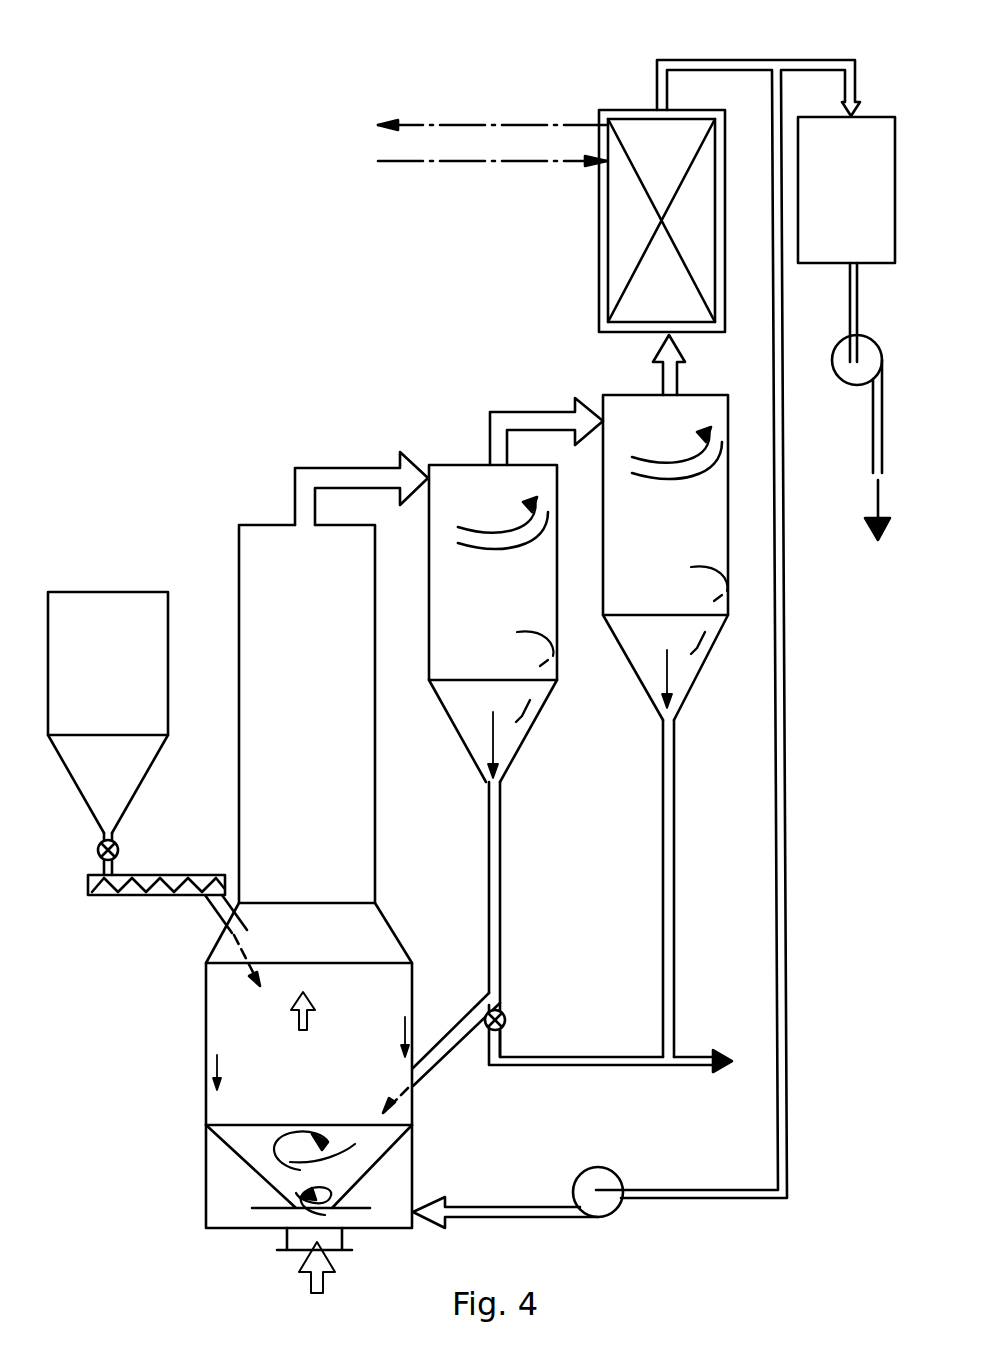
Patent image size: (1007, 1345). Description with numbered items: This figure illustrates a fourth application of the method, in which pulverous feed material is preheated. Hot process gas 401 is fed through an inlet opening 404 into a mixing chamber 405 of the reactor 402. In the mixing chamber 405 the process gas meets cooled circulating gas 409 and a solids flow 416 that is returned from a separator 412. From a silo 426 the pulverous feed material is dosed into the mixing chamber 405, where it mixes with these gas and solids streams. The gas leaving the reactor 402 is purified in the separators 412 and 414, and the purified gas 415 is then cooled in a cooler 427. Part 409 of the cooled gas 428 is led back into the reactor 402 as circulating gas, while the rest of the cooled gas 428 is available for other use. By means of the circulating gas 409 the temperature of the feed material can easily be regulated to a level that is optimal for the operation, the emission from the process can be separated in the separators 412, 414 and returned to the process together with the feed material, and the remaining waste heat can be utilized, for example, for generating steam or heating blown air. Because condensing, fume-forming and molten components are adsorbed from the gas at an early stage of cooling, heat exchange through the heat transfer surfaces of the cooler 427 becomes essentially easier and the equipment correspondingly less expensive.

The hot process gas 401 is at (308, 1278).
The reactor 402 is at (389, 867).
The inlet opening 404 is at (302, 1242).
The mixing chamber 405 is at (218, 1018).
The cooled circulating gas 409 is at (508, 1213).
The separator 412 is at (543, 593).
The separator 414 is at (718, 522).
The purified gas 415 is at (663, 377).
The solids flow 416 is at (430, 1070).
The silo 426 is at (153, 647).
The cooler 427 is at (613, 235).
The cooled gas 428 is at (712, 60).